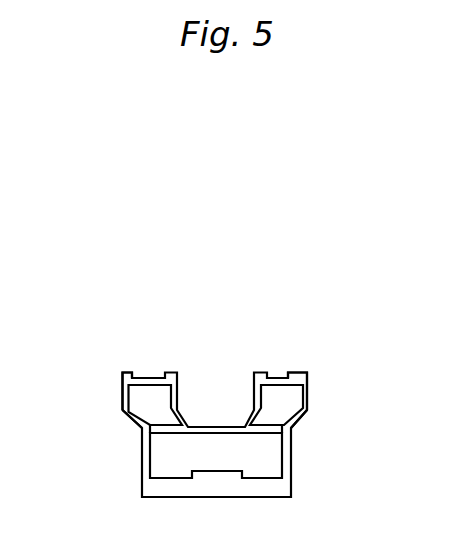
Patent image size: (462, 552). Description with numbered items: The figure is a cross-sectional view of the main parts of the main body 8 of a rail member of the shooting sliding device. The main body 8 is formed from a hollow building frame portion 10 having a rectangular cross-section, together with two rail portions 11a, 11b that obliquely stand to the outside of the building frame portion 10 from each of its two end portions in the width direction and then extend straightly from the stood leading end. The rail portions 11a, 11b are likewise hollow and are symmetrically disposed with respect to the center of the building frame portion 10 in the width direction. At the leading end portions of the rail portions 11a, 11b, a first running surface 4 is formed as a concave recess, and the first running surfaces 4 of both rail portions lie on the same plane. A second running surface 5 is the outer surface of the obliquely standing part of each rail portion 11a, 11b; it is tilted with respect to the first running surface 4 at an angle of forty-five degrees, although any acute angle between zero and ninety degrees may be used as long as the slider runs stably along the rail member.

The first running surface 4 is at (153, 377).
The second running surface 5 is at (128, 418).
The main body 8 is at (338, 390).
The building frame portion 10 is at (291, 468).
The rail portion 11a is at (122, 393).
The rail portion 11b is at (307, 395).